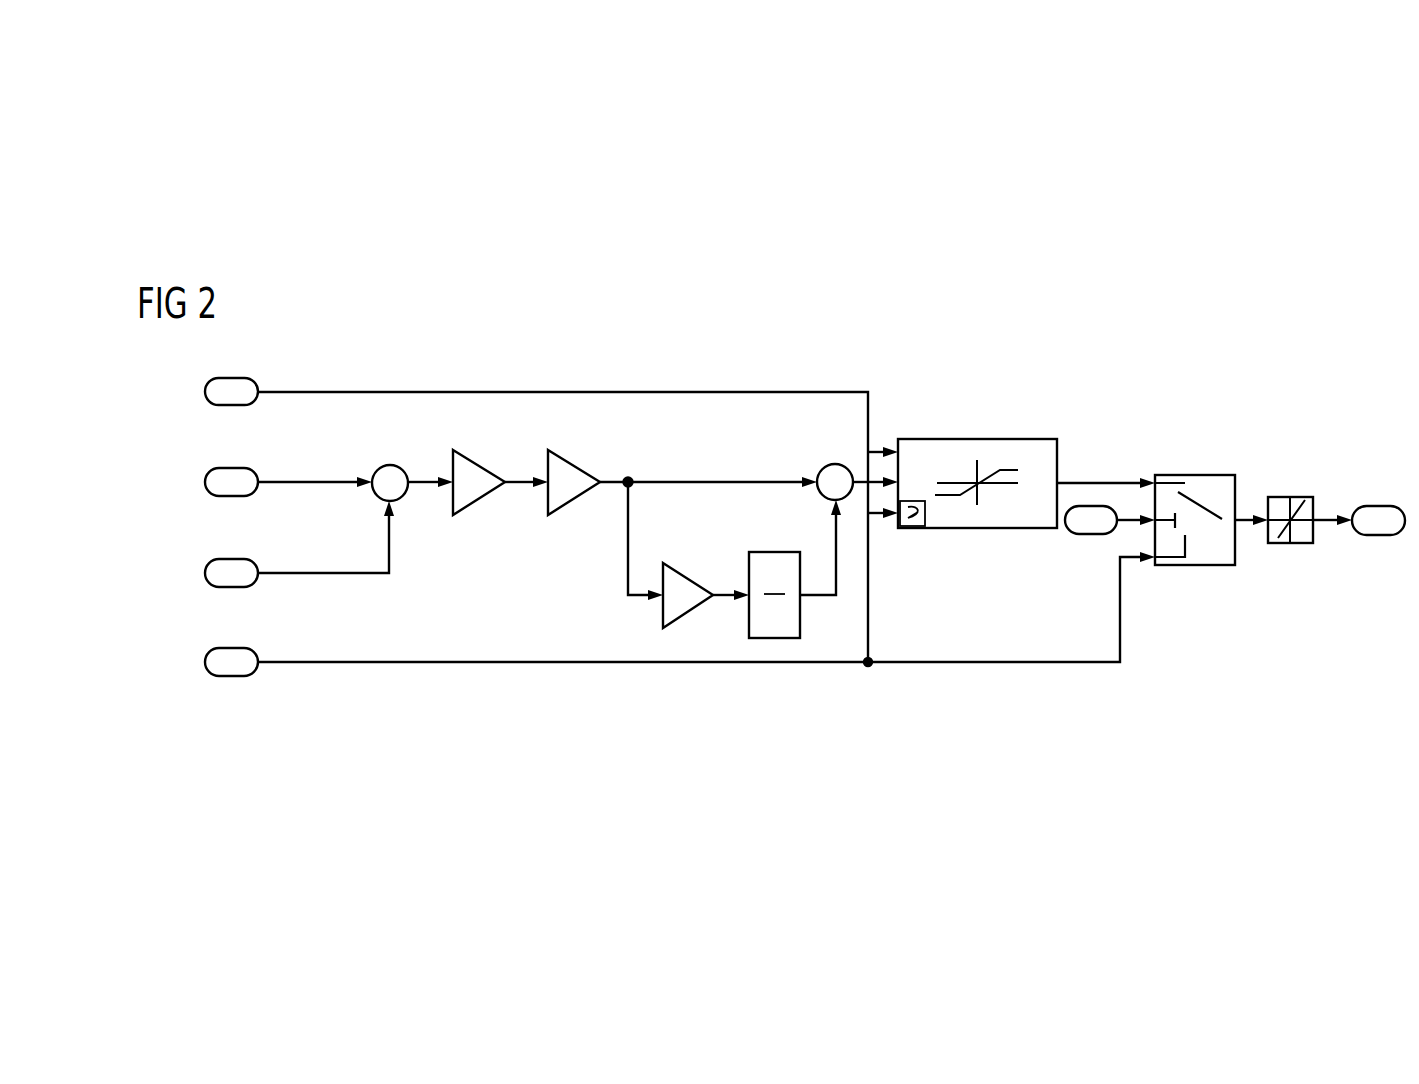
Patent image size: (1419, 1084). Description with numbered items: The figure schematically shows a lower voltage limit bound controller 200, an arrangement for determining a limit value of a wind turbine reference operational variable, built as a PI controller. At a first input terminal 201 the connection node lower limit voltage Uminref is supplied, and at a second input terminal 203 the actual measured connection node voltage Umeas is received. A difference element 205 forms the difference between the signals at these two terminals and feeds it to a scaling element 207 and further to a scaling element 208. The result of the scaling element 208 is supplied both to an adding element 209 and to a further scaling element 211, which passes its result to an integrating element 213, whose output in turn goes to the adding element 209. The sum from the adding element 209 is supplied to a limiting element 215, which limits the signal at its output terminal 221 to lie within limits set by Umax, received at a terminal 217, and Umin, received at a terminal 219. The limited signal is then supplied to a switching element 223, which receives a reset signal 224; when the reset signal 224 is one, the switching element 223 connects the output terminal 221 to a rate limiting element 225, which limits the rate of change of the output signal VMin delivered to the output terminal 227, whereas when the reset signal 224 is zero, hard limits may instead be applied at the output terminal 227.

The lower voltage limit bound controller 200 is at (1246, 326).
The terminal 217 is at (205, 392).
The first input terminal 201 is at (205, 482).
The second input terminal 203 is at (205, 572).
The terminal 219 is at (205, 662).
The difference element 205 is at (392, 464).
The scaling element 207 is at (482, 466).
The scaling element 208 is at (576, 466).
The adding element 209 is at (836, 464).
The further scaling element 211 is at (692, 576).
The integrating element 213 is at (773, 551).
The limiting element 215 is at (977, 438).
The output terminal 221 is at (1057, 480).
The reset signal 224 is at (1068, 531).
The switching element 223 is at (1195, 474).
The rate limiting element 225 is at (1302, 496).
The output terminal 227 is at (1378, 505).